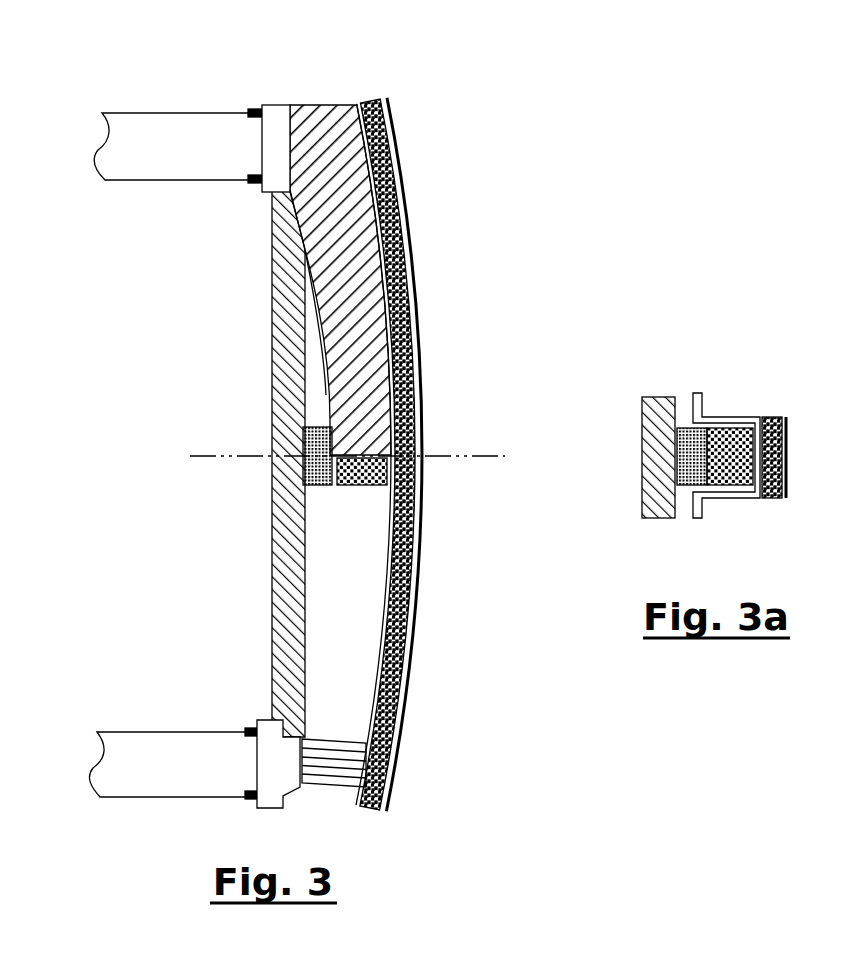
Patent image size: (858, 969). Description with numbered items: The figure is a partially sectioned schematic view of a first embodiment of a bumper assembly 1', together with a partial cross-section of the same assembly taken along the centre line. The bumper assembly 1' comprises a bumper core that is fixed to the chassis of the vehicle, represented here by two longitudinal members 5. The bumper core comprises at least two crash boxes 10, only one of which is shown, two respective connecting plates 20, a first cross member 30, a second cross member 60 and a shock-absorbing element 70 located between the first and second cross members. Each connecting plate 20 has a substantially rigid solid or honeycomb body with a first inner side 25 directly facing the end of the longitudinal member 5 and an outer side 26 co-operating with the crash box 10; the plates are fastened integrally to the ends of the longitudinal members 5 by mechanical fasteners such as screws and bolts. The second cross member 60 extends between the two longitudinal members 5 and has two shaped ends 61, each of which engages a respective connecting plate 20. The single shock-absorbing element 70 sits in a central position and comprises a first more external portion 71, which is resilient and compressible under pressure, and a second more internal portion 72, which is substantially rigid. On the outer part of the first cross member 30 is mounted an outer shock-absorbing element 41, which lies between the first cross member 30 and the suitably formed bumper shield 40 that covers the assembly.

In FIG. 3, the bumper assembly 1' is at (513, 185).
In FIG. 3A, the bumper assembly 1' is at (816, 203).
In FIG. 3, the longitudinal member 5 is at (163, 168).
In FIG. 3, the crash box 10 is at (332, 742).
In FIG. 3, the connecting plate 20 is at (268, 140).
In FIG. 3, the first inner side 25 is at (258, 768).
In FIG. 3, the outer side 26 is at (302, 790).
In FIG. 3, the first cross member 30 is at (337, 112).
In FIG. 3A, the first cross member 30 is at (722, 416).
In FIG. 3, the bumper shield 40 is at (413, 250).
In FIG. 3A, the bumper shield 40 is at (791, 453).
In FIG. 3, the outer shock-absorbing element 41 is at (403, 612).
In FIG. 3A, the outer shock-absorbing element 41 is at (770, 417).
In FIG. 3, the second cross member 60 is at (276, 333).
In FIG. 3A, the second cross member 60 is at (653, 397).
In FIG. 3, the shaped end 61 is at (300, 728).
In FIG. 3, the shock-absorbing element 70 is at (356, 492).
In FIG. 3, the first more external portion 71 is at (385, 470).
In FIG. 3A, the first more external portion 71 is at (730, 470).
In FIG. 3, the second more internal portion 72 is at (328, 486).
In FIG. 3A, the second more internal portion 72 is at (690, 468).